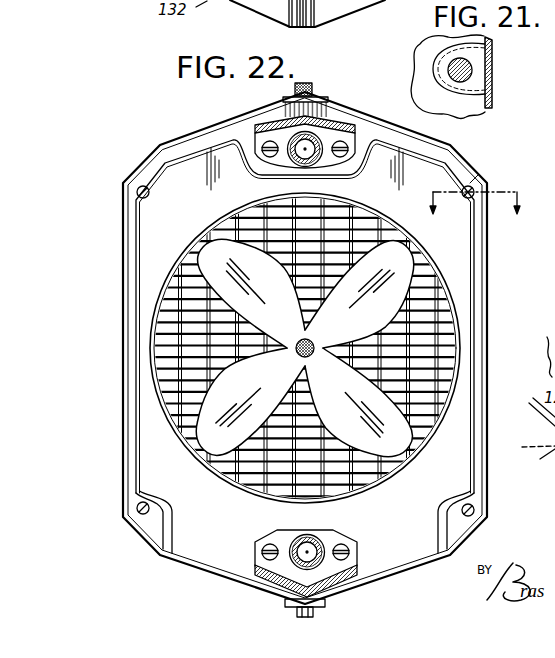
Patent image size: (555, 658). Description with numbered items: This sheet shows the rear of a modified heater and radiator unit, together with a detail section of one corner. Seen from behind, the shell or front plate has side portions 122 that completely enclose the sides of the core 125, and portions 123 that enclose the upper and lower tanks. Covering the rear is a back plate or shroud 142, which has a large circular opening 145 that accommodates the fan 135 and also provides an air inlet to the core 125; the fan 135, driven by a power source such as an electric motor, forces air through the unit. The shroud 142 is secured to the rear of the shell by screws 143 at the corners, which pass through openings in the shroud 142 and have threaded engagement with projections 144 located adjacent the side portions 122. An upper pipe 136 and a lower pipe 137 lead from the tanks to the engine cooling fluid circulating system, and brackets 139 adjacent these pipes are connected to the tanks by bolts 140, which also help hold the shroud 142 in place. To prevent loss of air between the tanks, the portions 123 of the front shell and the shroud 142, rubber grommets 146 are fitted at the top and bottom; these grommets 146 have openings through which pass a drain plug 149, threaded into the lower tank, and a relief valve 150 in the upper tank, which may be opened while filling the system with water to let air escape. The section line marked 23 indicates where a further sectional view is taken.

In FIG. 22, the side portions of the shell 122 is at (122, 378).
In FIG. 22, the portions of the front shell 123 is at (209, 127).
In FIG. 21, the portions of the front shell 123 is at (447, 112).
In FIG. 22, the core 125 is at (172, 408).
In FIG. 22, the fan 135 is at (363, 320).
In FIG. 22, the upper pipe 136 is at (305, 160).
In FIG. 22, the lower pipe 137 is at (303, 536).
In FIG. 22, the brackets 139 is at (330, 122).
In FIG. 22, the bolts 140 is at (347, 146).
In FIG. 22, the shroud 142 is at (227, 547).
In FIG. 21, the shroud 142 is at (491, 45).
In FIG. 22, the screws 143 is at (137, 193).
In FIG. 22, the projections 144 is at (472, 181).
In FIG. 22, the opening 145 is at (453, 349).
In FIG. 22, the grommets 146 is at (324, 96).
In FIG. 21, the grommets 146 is at (472, 88).
In FIG. 22, the drain plug 149 is at (296, 612).
In FIG. 21, the drain plug 149 is at (473, 72).
In FIG. 22, the relief valve 150 is at (303, 82).
In FIG. 22, the section line 23- 23 is at (476, 193).